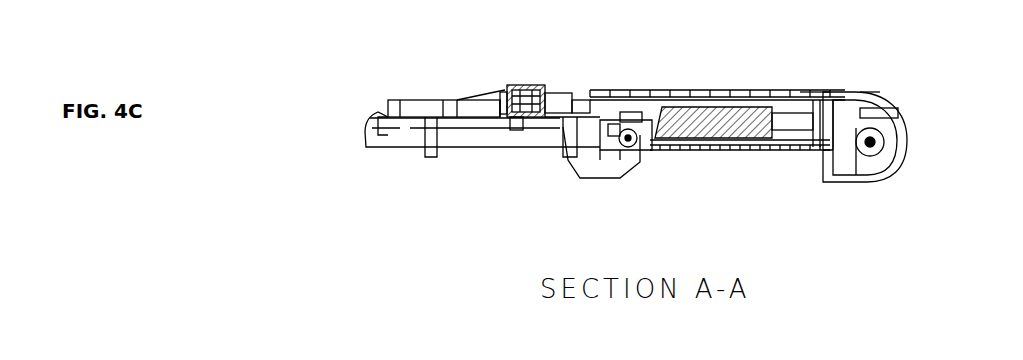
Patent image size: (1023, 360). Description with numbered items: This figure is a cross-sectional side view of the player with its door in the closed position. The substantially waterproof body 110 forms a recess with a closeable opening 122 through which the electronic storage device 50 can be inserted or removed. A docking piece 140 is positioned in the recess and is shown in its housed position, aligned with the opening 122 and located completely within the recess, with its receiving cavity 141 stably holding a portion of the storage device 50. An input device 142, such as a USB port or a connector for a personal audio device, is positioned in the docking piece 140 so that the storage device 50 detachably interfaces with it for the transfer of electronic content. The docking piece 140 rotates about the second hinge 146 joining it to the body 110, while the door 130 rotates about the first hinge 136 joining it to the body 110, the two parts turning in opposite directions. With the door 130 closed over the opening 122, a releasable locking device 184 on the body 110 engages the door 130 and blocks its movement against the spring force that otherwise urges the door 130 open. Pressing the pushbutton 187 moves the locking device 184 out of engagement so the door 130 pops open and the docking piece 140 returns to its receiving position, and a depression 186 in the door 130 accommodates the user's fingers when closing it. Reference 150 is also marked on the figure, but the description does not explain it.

The body 110 is at (383, 108).
The pushbutton 187 is at (503, 86).
The releasable locking device 184 is at (520, 88).
The depression 186 is at (588, 92).
The second hinge 146 is at (717, 50).
The receiving cavity 141 is at (632, 120).
The docking piece 140 is at (643, 152).
The input device 142 is at (614, 130).
The electronic storage device 50 is at (710, 128).
The door 130 is at (728, 97).
The closeable opening 122 is at (786, 96).
The lever 150 is at (808, 0).
The first hinge 136 is at (893, 48).